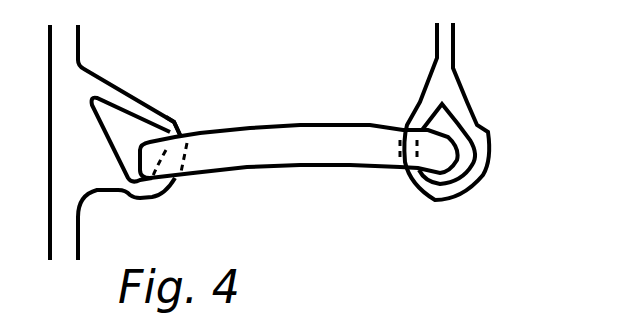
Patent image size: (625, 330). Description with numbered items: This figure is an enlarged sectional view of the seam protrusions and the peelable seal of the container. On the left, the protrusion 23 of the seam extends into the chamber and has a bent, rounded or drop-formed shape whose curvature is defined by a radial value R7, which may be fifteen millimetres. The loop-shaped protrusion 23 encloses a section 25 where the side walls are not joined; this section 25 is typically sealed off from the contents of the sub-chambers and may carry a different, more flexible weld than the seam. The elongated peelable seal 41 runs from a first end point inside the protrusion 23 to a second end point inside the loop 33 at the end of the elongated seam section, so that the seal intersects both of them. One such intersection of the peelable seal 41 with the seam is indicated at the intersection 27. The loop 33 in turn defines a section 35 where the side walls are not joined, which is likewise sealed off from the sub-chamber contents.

The protrusion 23 is at (176, 118).
The radial value R7 is at (128, 140).
The section 25 is at (122, 130).
The peelable seal 41 is at (221, 143).
The intersection 27 is at (180, 177).
The loop 33 is at (477, 136).
The section 35 is at (474, 153).